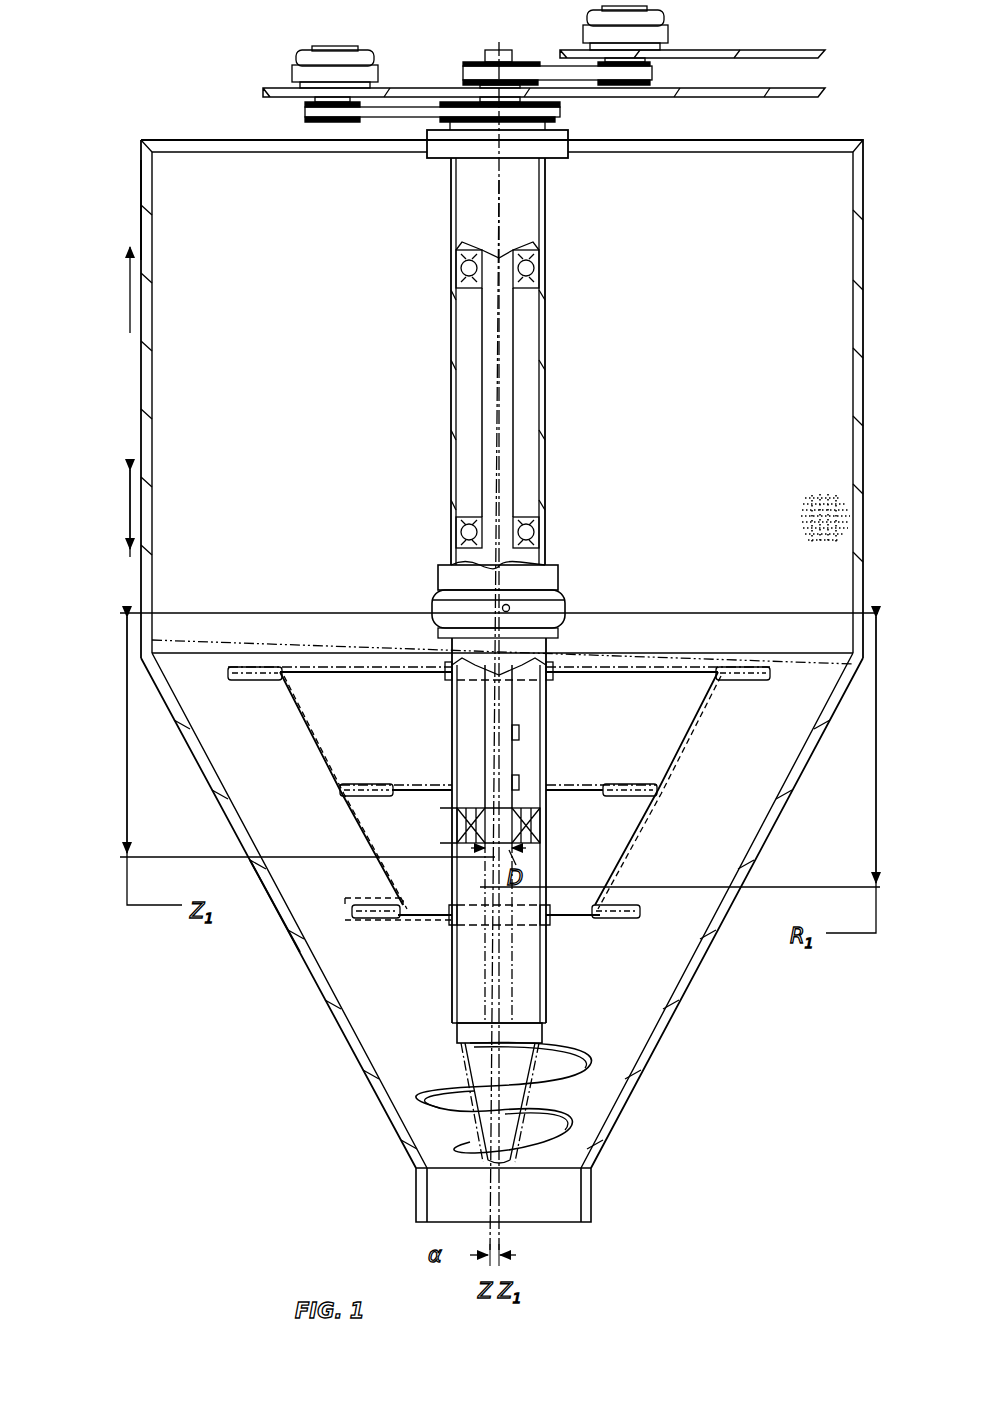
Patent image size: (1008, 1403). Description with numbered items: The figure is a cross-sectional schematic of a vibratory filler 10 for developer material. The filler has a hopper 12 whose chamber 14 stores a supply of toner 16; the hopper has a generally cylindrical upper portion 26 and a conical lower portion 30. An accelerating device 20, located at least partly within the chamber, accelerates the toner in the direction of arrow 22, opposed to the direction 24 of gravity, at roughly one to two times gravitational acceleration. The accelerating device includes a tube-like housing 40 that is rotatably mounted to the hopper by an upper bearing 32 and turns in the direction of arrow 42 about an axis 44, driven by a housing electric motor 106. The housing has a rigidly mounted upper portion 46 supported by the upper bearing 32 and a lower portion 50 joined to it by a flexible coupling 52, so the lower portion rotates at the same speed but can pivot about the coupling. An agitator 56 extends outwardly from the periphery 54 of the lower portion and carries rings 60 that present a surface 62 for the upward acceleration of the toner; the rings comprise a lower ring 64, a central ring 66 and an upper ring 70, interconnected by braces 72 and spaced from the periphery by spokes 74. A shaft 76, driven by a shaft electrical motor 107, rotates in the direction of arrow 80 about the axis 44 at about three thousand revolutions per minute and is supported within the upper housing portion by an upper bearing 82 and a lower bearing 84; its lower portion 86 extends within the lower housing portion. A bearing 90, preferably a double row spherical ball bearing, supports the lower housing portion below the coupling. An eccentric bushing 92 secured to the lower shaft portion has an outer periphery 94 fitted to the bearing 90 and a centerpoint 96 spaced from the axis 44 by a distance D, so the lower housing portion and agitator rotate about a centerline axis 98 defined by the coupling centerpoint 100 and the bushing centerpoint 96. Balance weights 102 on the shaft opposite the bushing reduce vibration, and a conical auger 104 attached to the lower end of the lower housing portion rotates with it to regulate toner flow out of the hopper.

The vibratory filler 10 is at (856, 50).
The hopper 12 is at (866, 178).
The chamber 14 is at (786, 183).
The toner 16 is at (842, 508).
The accelerating device 20 is at (302, 883).
The arrow 22 is at (130, 283).
The direction of gravity 24 is at (130, 487).
The upper portion of hopper 26 is at (141, 187).
The lower portion of hopper 30 is at (290, 934).
The upper bearing 32 is at (562, 133).
The housing 40 is at (548, 410).
The arrow 42 is at (495, 52).
The axis 44 is at (499, 188).
The upper portion of housing 46 is at (551, 352).
The lower portion of housing 50 is at (552, 848).
The flexible coupling 52 is at (541, 603).
The periphery 54 is at (548, 948).
The agitator 56 is at (657, 790).
The rings 60 is at (250, 697).
The surface 62 is at (252, 667).
The lower ring 64 is at (380, 918).
The central ring 66 is at (624, 786).
The upper ring 70 is at (243, 683).
The braces 72 is at (323, 772).
The spokes 74 is at (590, 795).
The shaft 76 is at (514, 310).
The arrow 80 is at (440, 14).
The upper bearing 82 is at (530, 268).
The lower bearing 84 is at (530, 532).
The lower portion of shaft 86 is at (503, 706).
The bearing 90 is at (527, 838).
The eccentric bushing 92 is at (455, 790).
The outer periphery 94 is at (456, 838).
The centerpoint 96 is at (495, 823).
The centerline axis 98 is at (497, 1198).
The centerpoint 100 is at (497, 612).
The balance weights 102 is at (520, 729).
The auger 104 is at (578, 1060).
The housing electric motor 106 is at (300, 60).
The shaft electrical motor 107 is at (665, 33).